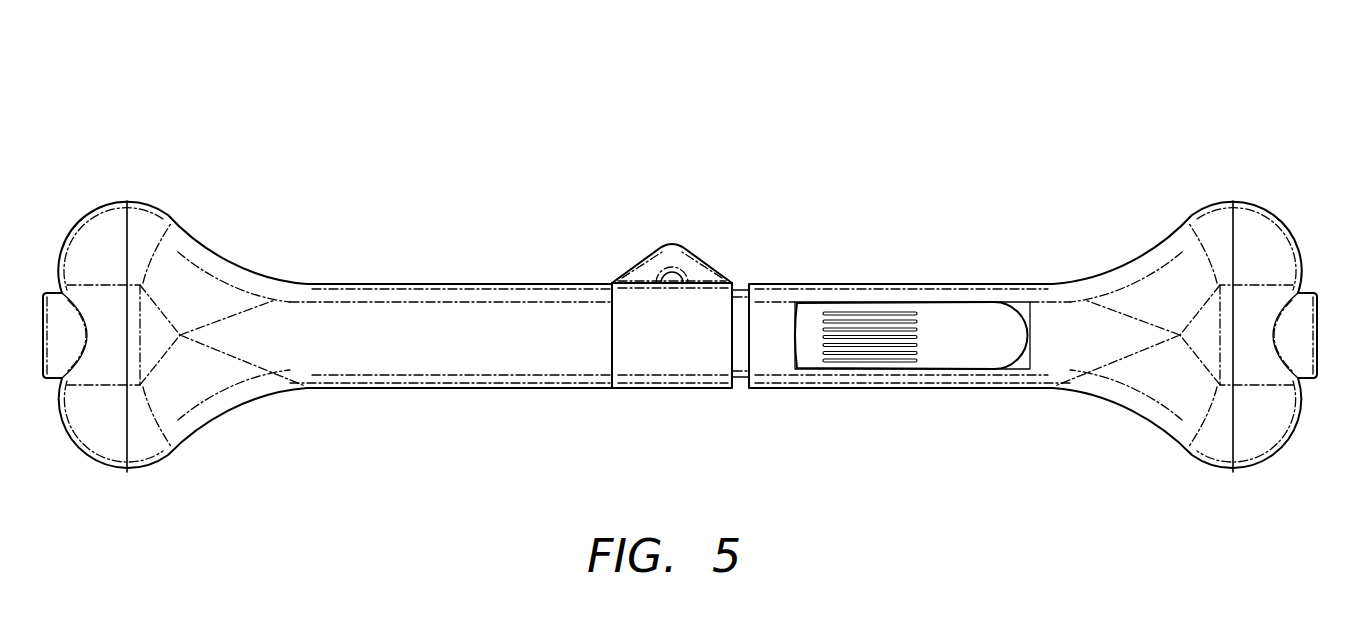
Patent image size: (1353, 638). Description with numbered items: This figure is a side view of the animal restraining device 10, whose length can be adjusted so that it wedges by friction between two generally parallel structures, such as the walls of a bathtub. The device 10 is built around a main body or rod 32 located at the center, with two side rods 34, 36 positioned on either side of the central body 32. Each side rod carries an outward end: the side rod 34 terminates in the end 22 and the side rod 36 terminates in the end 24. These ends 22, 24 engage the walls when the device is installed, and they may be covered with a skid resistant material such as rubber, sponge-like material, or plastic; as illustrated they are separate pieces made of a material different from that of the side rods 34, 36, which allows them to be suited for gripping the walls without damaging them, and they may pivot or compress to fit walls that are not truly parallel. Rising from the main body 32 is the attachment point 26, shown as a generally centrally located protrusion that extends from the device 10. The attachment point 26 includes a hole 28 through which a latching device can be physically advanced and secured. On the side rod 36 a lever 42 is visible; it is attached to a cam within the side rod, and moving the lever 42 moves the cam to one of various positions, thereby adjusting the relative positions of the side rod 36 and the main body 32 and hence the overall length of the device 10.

The animal restraining device 10 is at (752, 88).
The outward end 22 is at (98, 228).
The outward end 24 is at (1262, 220).
The attachment point 26 is at (682, 255).
The hole 28 is at (665, 267).
The main body 32 is at (670, 383).
The side rod 34 is at (417, 368).
The side rod 36 is at (1052, 380).
The lever 42 is at (960, 357).